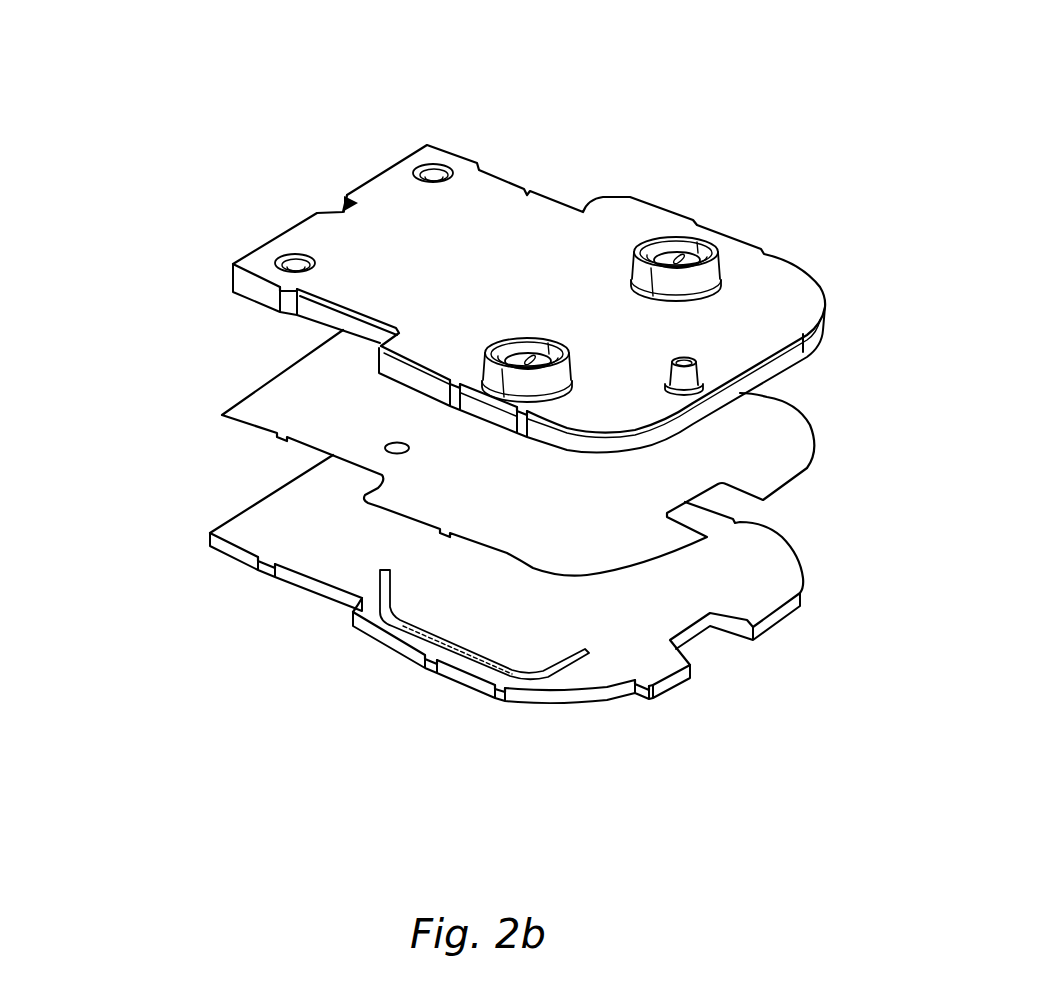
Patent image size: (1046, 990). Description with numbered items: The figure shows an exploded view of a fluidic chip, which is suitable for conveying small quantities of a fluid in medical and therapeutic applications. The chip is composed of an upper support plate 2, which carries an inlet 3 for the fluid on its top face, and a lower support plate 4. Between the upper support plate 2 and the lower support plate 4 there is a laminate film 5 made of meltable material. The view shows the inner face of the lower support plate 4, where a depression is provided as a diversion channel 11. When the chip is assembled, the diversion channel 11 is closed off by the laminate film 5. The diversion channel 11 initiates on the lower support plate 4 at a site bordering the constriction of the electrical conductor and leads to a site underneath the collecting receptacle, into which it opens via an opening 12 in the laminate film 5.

The upper support plate 2 is at (253, 264).
The inlet 3 is at (697, 362).
The lower support plate 4 is at (226, 535).
The laminate film 5 is at (250, 406).
The diversion channel 11 is at (383, 610).
The opening 12 is at (386, 452).